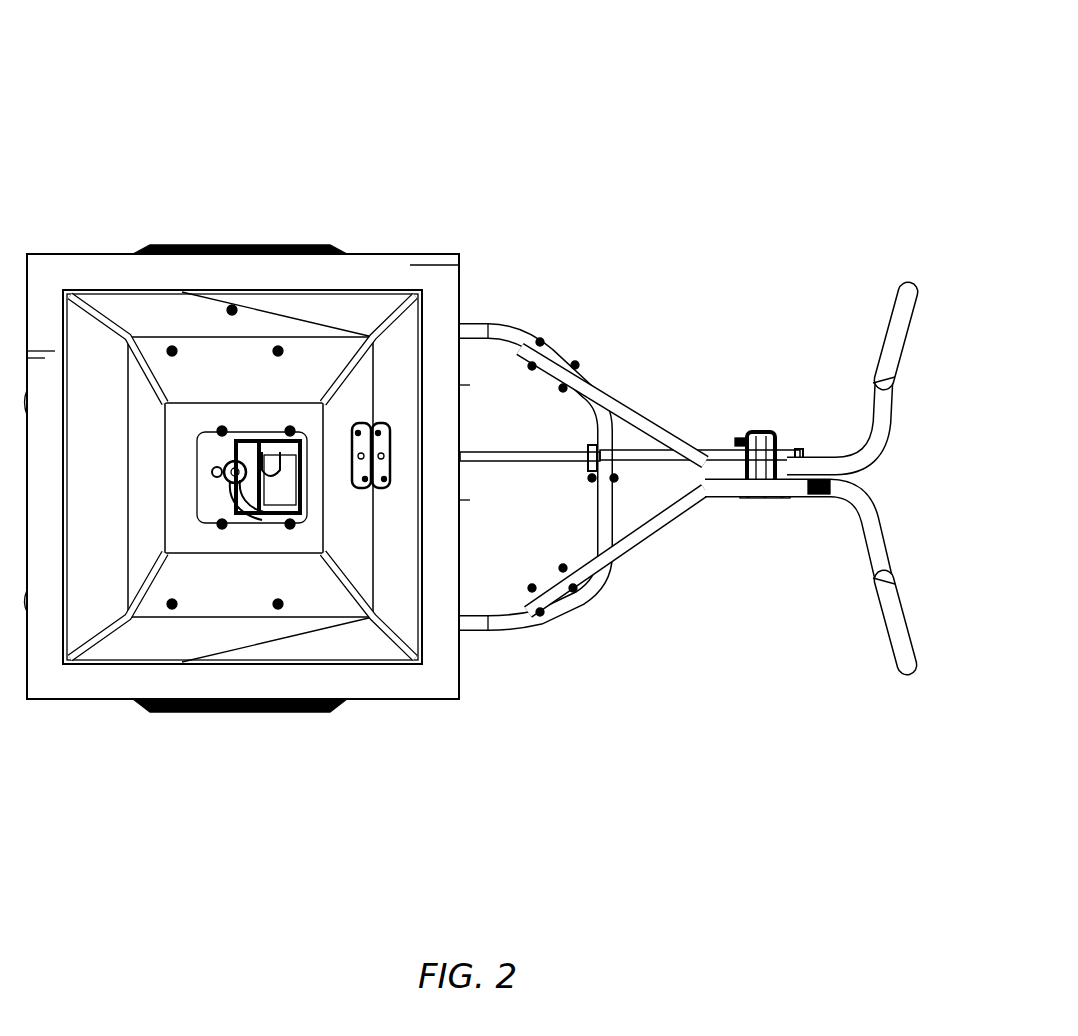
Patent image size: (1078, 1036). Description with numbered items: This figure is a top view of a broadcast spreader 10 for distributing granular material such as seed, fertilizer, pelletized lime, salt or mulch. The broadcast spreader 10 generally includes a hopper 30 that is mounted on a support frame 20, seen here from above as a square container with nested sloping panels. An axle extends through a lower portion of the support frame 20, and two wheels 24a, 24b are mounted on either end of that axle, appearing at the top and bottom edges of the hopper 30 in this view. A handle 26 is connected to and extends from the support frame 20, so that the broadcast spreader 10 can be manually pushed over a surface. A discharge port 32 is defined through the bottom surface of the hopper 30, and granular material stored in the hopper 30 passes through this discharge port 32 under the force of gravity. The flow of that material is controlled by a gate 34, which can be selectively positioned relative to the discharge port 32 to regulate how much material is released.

The broadcast spreader 10 is at (178, 68).
The support frame 20 is at (475, 322).
The wheel 24a is at (165, 248).
The wheel 24b is at (170, 714).
The handle 26 is at (880, 543).
The hopper 30 is at (357, 268).
The discharge port 32 is at (266, 443).
The gate 34 is at (282, 525).